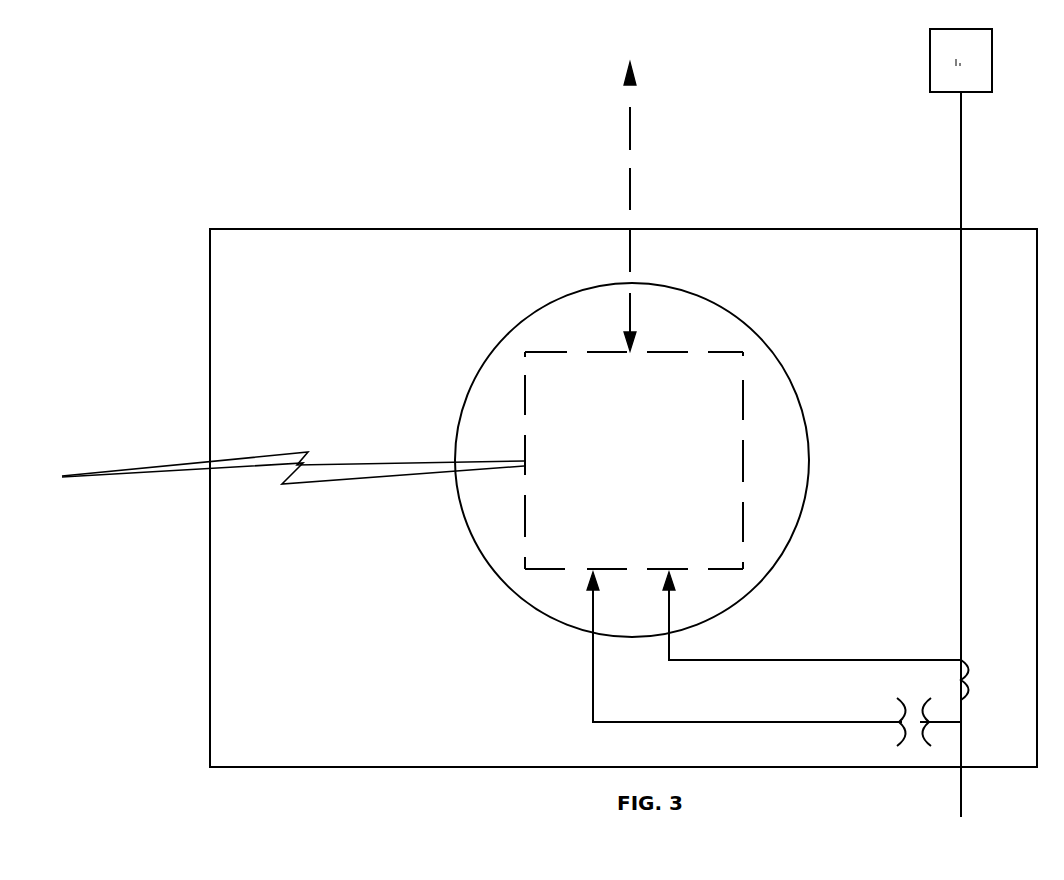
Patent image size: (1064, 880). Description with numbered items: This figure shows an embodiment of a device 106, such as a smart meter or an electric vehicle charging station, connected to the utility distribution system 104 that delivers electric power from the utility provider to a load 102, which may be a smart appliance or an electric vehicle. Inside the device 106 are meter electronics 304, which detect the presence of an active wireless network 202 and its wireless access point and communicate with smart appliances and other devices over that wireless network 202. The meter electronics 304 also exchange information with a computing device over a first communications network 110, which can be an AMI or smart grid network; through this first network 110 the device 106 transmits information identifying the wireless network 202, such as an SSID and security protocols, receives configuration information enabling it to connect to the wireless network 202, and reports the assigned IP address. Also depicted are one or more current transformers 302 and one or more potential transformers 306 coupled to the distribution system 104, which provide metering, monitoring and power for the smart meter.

The load 102 is at (961, 60).
The distribution system 104 is at (960, 145).
The device 106 is at (783, 229).
The first communications network 110 is at (628, 150).
The wireless network 202 is at (250, 453).
The current transformer 302 is at (955, 677).
The meter electronics 304 is at (523, 405).
The potential transformer 306 is at (895, 722).